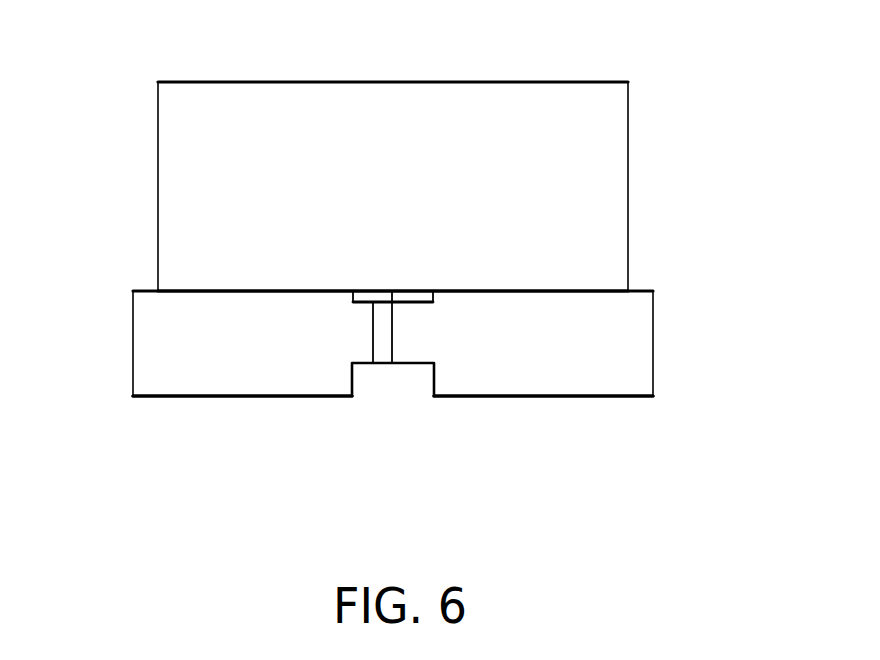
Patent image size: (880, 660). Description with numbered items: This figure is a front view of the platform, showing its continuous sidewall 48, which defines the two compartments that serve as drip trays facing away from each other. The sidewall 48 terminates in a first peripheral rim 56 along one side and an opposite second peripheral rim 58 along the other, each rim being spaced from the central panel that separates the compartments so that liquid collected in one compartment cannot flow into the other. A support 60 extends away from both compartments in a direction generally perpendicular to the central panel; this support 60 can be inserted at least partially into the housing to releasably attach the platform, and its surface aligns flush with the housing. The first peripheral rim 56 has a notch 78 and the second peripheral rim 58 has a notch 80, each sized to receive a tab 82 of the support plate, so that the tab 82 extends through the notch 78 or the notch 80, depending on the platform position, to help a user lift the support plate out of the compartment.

The sidewall 48 is at (178, 335).
The first peripheral rim 56 is at (195, 288).
The second peripheral rim 58 is at (177, 397).
The support 60 is at (527, 127).
The notch 78 is at (372, 303).
The notch 80 is at (432, 383).
The tab 82 is at (425, 297).